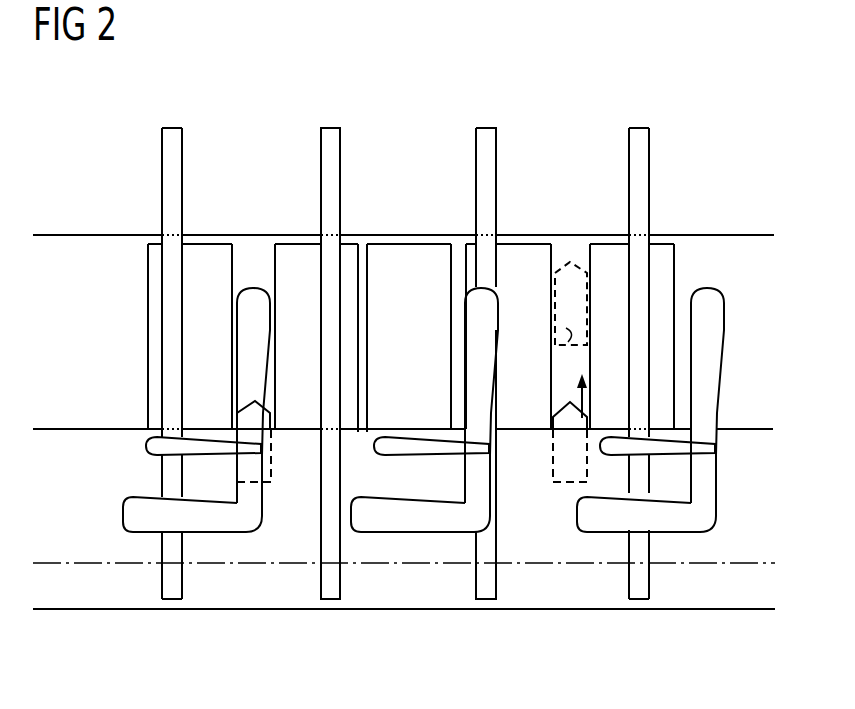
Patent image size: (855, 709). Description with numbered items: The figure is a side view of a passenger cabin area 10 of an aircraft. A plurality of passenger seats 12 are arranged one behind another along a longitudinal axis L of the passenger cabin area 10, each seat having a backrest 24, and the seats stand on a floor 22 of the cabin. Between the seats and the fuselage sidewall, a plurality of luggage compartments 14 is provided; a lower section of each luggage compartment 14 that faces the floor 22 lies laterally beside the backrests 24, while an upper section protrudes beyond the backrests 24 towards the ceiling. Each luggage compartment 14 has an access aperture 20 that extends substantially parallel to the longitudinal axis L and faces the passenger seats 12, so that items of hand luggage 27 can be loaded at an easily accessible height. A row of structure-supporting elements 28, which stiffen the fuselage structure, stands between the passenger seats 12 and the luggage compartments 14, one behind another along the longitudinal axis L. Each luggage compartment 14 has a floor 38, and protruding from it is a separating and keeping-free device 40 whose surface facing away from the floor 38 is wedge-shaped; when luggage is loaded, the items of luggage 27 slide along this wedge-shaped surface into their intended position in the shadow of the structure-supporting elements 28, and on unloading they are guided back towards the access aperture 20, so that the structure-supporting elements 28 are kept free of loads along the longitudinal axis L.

The passenger cabin area 10 is at (727, 102).
The passenger seat 12 is at (217, 520).
The luggage compartment 14 is at (247, 243).
The access aperture 20 is at (263, 265).
The floor 22 is at (526, 612).
The backrest 24 is at (256, 348).
The item of hand luggage 27 is at (213, 253).
The structure-supporting element 28 is at (174, 128).
The floor of the luggage compartment 38 is at (356, 432).
The separating and keeping-free device 40 is at (268, 416).
The longitudinal axis L is at (761, 565).